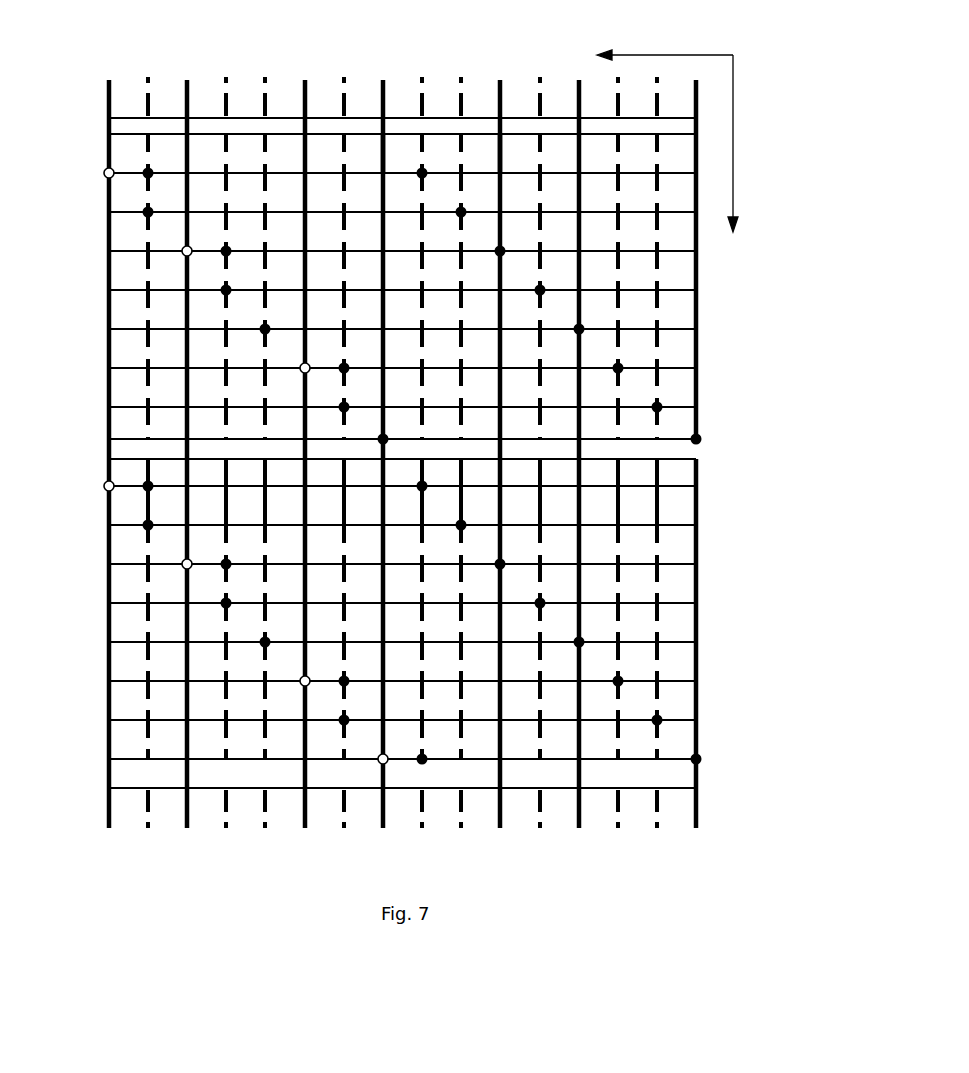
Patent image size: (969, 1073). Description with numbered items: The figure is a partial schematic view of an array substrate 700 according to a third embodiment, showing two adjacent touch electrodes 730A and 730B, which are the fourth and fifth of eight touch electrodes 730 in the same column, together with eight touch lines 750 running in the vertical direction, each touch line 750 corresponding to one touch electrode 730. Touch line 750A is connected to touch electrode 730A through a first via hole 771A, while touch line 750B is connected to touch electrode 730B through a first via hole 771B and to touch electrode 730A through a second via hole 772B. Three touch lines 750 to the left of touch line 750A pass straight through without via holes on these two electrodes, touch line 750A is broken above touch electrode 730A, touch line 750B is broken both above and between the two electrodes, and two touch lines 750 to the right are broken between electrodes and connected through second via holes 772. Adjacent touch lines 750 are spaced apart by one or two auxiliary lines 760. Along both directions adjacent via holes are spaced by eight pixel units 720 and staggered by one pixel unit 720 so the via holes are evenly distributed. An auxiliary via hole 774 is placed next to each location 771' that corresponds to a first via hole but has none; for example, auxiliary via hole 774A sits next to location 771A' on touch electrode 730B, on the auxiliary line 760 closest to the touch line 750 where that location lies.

The array substrate 700 is at (140, 16).
The pixel unit 720 is at (680, 500).
The touch electrode 730 is at (459, 429).
The touch electrode 730A is at (700, 393).
The touch electrode 730B is at (700, 650).
The touch line 750 is at (187, 147).
The touch line 750A is at (383, 151).
The touch line 750B is at (500, 146).
The auxiliary line 760 is at (226, 152).
The first via hole 771A is at (167, 415).
The location corresponding to first via hole 771A' is at (339, 807).
The location corresponding to a first via hole 771' is at (65, 475).
The first via hole 771B is at (500, 564).
The second via hole 772 is at (700, 447).
The second via hole 772B is at (502, 240).
The auxiliary via hole 774 is at (146, 488).
The auxiliary via hole 774A is at (423, 765).